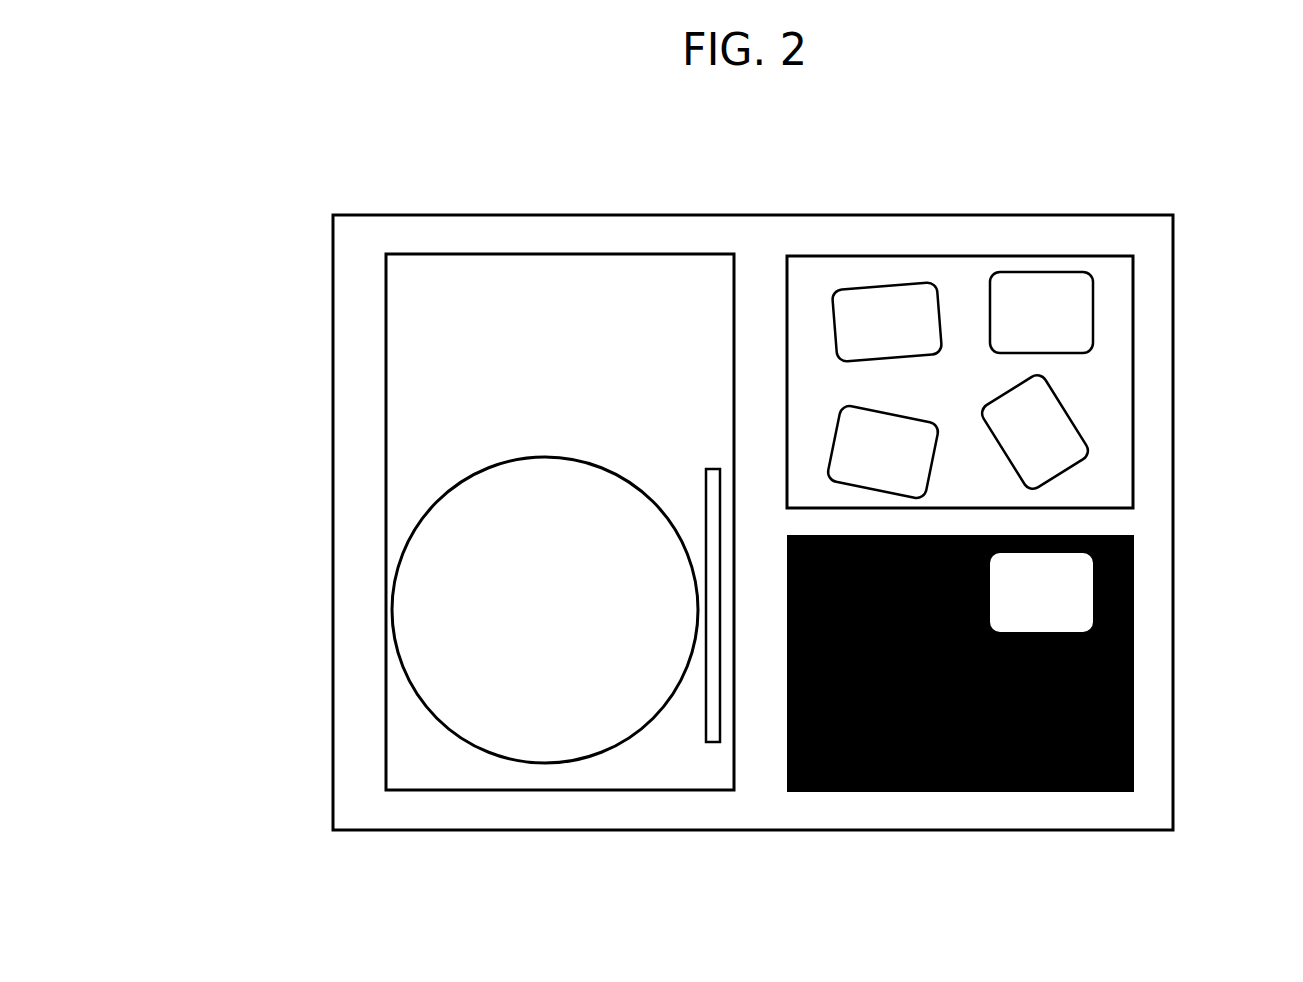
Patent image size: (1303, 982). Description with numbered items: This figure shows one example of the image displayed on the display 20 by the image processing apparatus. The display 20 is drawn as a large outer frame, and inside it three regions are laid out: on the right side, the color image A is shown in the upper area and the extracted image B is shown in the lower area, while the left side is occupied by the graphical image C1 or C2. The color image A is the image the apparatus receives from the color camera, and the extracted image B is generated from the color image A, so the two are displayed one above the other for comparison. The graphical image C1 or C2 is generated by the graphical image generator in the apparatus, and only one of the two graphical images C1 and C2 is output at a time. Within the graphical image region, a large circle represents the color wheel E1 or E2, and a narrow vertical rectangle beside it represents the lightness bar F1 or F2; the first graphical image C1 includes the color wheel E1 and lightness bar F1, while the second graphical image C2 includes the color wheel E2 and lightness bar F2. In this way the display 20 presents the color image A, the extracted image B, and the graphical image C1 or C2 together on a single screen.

The display 20 is at (742, 215).
The color image A is at (1133, 375).
The extracted image B is at (1135, 665).
The first graphical image C1 is at (452, 522).
The second graphical image C2 is at (386, 473).
The color wheel E1 is at (545, 674).
The color wheel E2 is at (538, 730).
The lightness bar F1 is at (718, 684).
The lightness bar F2 is at (710, 743).